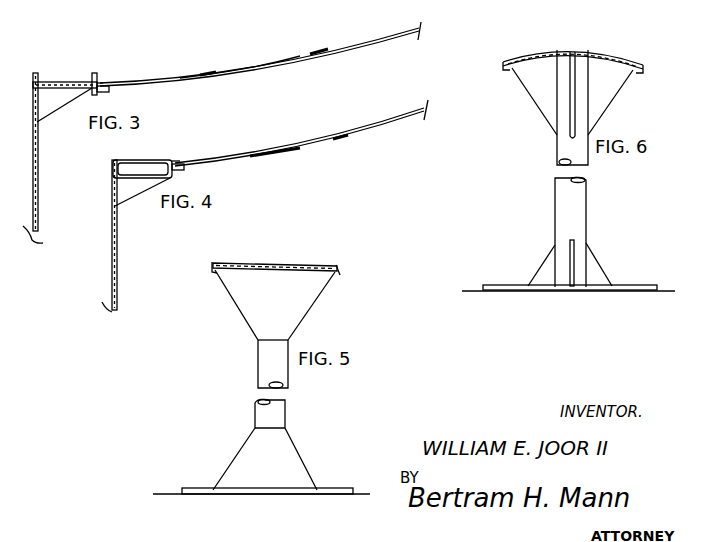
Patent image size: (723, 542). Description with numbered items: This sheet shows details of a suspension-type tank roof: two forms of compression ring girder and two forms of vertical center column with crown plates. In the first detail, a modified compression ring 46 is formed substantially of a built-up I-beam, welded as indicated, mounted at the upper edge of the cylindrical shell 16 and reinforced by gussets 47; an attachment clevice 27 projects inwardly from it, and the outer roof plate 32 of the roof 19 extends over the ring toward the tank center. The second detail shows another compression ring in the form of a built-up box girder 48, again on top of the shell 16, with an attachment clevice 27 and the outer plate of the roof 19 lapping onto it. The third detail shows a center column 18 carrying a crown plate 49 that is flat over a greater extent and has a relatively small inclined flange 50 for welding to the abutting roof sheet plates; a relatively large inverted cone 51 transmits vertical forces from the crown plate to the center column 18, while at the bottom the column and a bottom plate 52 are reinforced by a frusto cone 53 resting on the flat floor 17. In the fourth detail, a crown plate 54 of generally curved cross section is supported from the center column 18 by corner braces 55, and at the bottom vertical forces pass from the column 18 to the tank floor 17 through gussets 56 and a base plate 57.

In FIG. 3, the cylindrical side wall or shell 16 is at (57, 178).
In FIG. 4, the cylindrical side wall or shell 16 is at (135, 262).
In FIG. 5, the flat floor 17 is at (158, 493).
In FIG. 6, the flat floor 17 is at (470, 290).
In FIG. 5, the center column 18 is at (257, 374).
In FIG. 6, the center column 18 is at (557, 161).
In FIG. 3, the suspension-type roof 19 is at (262, 71).
In FIG. 4, the suspension-type roof 19 is at (333, 134).
In FIG. 3, the attachment clevices 27 is at (104, 92).
In FIG. 4, the attachment clevices 27 is at (184, 168).
In FIG. 3, the roof plate section 32 is at (130, 83).
In FIG. 3, the compression ring 46 is at (80, 52).
In FIG. 3, the reinforcing gussets 47 is at (58, 105).
In FIG. 4, the built-up box girder 48 is at (147, 173).
In FIG. 5, the crown plate 49 is at (320, 263).
In FIG. 5, the inclined flange 50 is at (213, 264).
In FIG. 5, the inverted cone 51 is at (305, 313).
In FIG. 5, the bottom plate 52 is at (208, 472).
In FIG. 5, the frusto cone 53 is at (240, 452).
In FIG. 6, the crown plate 54 is at (548, 52).
In FIG. 6, the corner braces 55 is at (570, 85).
In FIG. 6, the gussets 56 is at (570, 268).
In FIG. 6, the base plate 57 is at (502, 285).